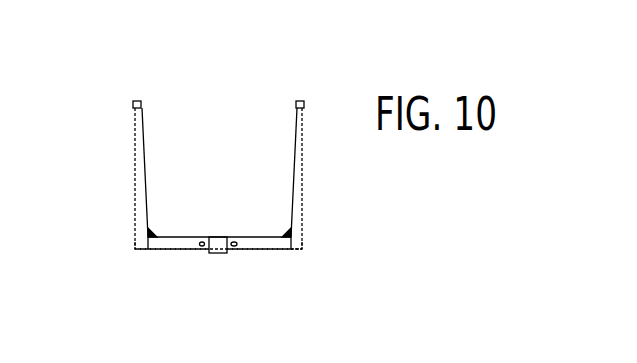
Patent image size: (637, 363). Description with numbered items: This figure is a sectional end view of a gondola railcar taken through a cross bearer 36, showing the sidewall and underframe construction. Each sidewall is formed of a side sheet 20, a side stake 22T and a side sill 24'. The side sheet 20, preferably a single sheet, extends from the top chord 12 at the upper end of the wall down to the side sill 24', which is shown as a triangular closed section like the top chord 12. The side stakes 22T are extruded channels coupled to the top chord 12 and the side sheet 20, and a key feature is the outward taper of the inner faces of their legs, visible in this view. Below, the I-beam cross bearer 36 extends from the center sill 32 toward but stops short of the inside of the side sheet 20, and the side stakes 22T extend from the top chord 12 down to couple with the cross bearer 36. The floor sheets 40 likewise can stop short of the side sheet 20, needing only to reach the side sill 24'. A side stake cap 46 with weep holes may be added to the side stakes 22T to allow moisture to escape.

The top chord 12 is at (133, 102).
The side sheet 20 is at (146, 166).
The side stake 22T is at (133, 189).
The side sill 24' is at (219, 196).
The center sill 32 is at (215, 254).
The cross bearer 36 is at (167, 245).
The floor sheet 40 is at (286, 236).
The side stake cap 46 is at (137, 251).